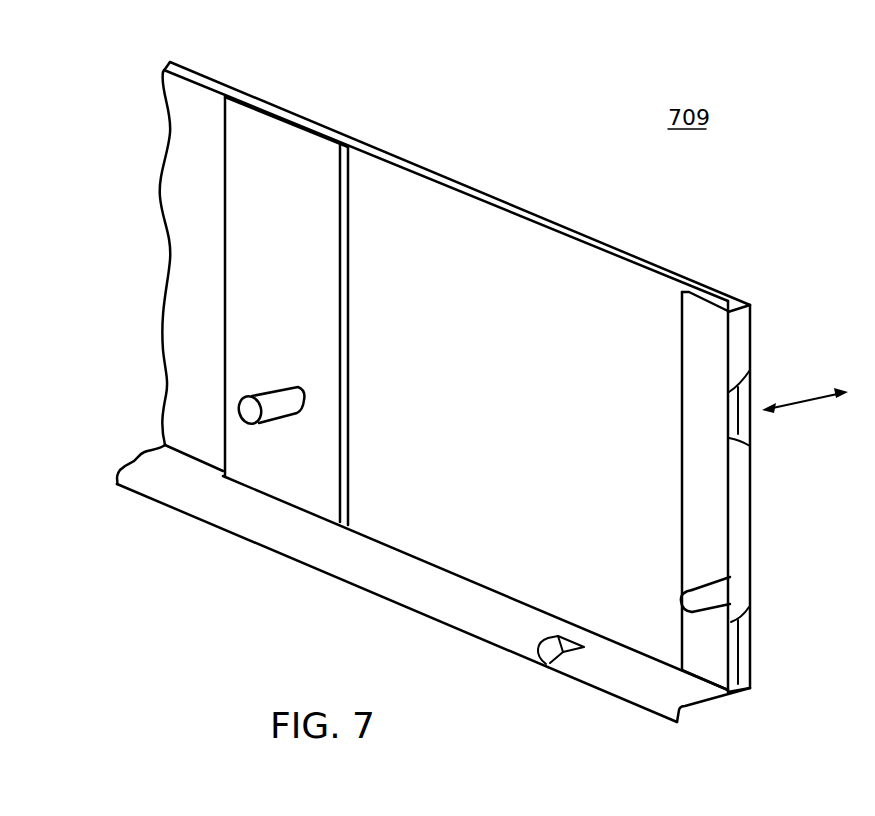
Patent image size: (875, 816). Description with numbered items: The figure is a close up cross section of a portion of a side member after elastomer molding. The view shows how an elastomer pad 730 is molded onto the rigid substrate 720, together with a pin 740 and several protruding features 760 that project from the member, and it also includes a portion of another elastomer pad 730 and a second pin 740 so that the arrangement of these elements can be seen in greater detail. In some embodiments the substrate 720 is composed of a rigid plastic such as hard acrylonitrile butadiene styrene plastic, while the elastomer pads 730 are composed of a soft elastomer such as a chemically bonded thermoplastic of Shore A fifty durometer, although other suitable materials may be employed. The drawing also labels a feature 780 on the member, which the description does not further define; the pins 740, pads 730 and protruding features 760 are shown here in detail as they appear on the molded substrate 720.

The substrate 720 is at (434, 149).
The elastomer pad 730 is at (272, 472).
The pin 740 is at (243, 404).
The protruding feature 760 is at (740, 322).
The raised strip 780 is at (287, 147).